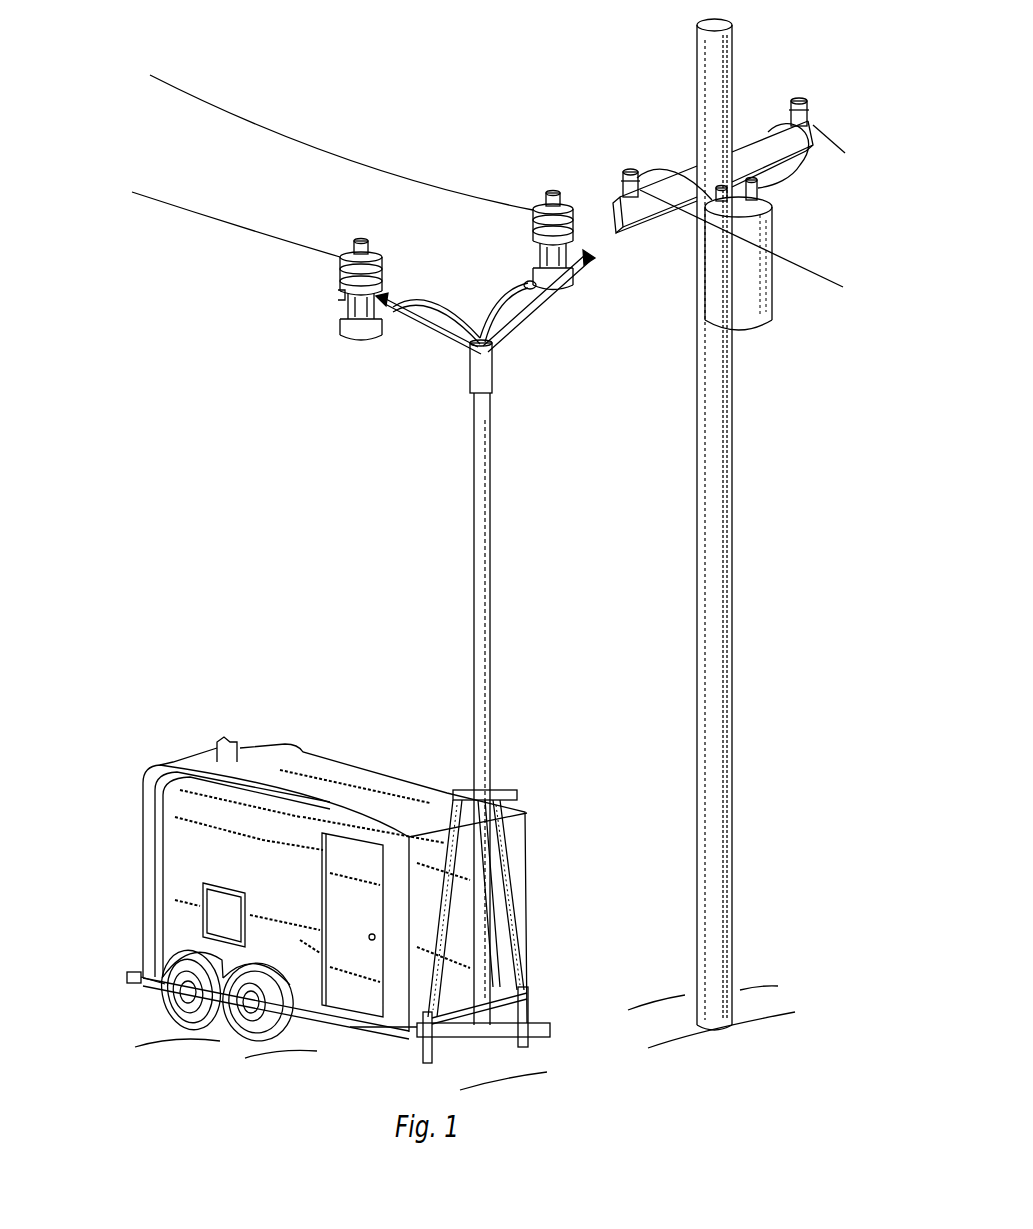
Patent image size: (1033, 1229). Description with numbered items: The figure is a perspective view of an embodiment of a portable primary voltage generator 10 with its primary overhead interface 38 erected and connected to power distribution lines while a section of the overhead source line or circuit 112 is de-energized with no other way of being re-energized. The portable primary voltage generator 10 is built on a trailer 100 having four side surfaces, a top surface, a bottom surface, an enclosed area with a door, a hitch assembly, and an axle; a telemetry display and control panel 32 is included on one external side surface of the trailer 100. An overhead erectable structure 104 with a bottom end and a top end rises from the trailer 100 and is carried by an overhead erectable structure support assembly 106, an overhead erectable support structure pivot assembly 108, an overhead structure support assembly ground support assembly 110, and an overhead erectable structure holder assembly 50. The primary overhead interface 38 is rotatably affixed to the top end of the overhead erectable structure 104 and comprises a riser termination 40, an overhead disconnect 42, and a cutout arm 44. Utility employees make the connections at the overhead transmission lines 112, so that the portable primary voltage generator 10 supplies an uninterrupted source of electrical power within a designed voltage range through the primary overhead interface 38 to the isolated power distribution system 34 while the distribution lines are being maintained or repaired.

The portable primary voltage generator 10 is at (232, 698).
The telemetry display and control panel 32 is at (223, 895).
The isolated power distribution system 34 is at (285, 128).
The primary overhead interface 38 is at (350, 210).
The riser termination 40 is at (484, 297).
The overhead disconnect 42 is at (338, 293).
The cutout arm 44 is at (431, 358).
The overhead erectable structure holder assembly 50 is at (327, 882).
The trailer 100 is at (355, 775).
The overhead erectable structure 104 is at (492, 598).
The overhead erectable structure support assembly 106 is at (472, 1043).
The overhead erectable support structure pivot assembly 108 is at (492, 372).
The overhead structure support assembly ground support assembly 110 is at (497, 866).
The overhead source line or circuit 112 is at (676, 142).